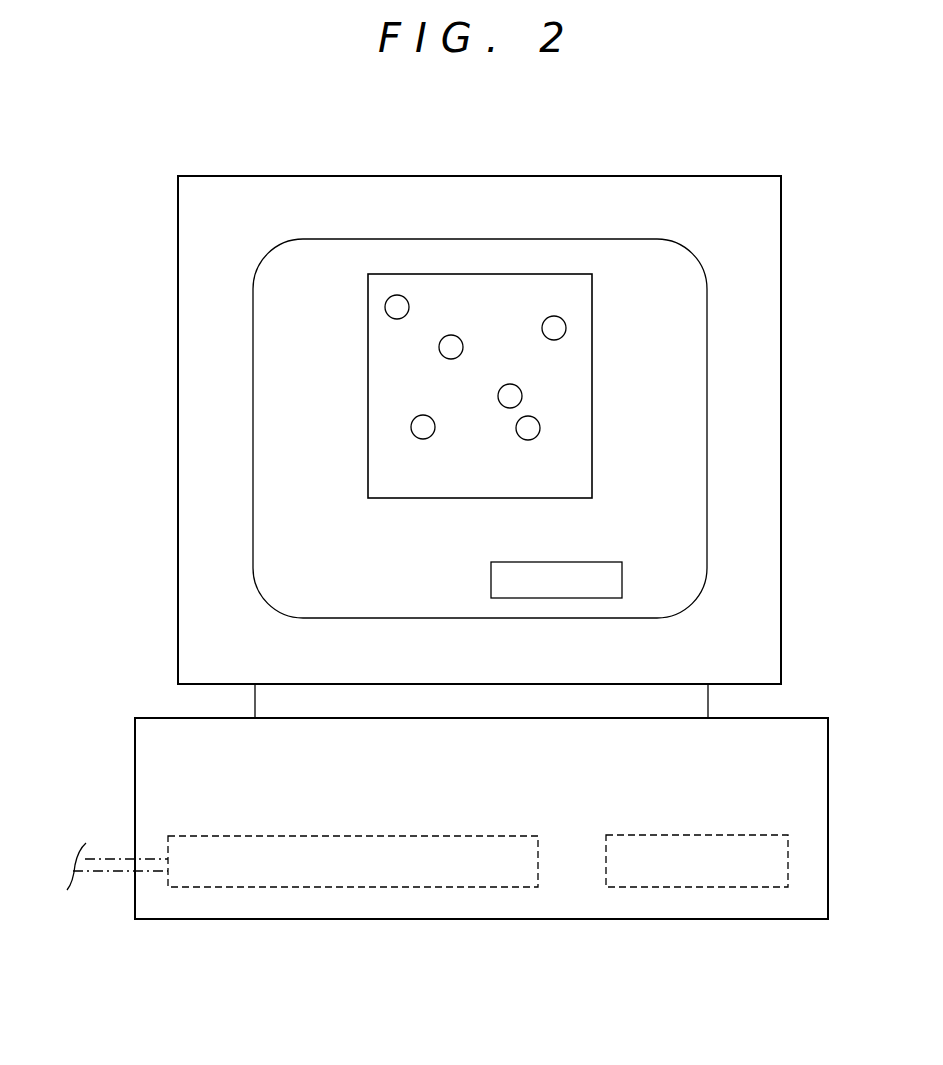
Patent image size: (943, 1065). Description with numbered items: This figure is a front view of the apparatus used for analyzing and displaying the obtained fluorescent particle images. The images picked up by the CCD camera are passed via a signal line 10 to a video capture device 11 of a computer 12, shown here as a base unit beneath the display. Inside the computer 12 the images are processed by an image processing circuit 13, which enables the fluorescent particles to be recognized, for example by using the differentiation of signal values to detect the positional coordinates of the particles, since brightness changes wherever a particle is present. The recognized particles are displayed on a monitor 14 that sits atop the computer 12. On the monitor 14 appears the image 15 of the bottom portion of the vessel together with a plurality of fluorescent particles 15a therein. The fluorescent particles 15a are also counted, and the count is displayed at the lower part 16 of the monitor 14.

The signal line 10 is at (100, 872).
The video capture device 11 is at (232, 887).
The computer 12 is at (566, 898).
The image processing circuit 13 is at (716, 877).
The monitor 14 is at (683, 312).
The image of the bottom portion of the vessel 15 is at (528, 292).
The fluorescent particles 15a is at (397, 300).
The lower part of the monitor 16 is at (617, 577).